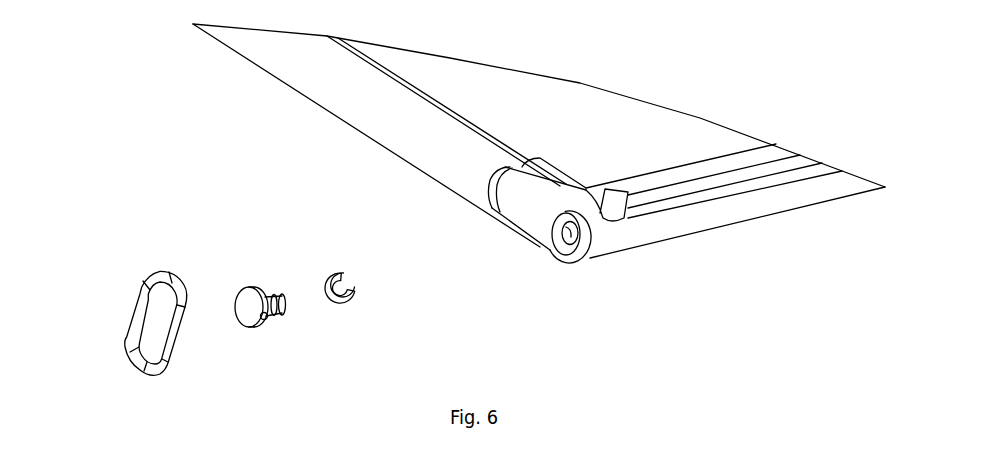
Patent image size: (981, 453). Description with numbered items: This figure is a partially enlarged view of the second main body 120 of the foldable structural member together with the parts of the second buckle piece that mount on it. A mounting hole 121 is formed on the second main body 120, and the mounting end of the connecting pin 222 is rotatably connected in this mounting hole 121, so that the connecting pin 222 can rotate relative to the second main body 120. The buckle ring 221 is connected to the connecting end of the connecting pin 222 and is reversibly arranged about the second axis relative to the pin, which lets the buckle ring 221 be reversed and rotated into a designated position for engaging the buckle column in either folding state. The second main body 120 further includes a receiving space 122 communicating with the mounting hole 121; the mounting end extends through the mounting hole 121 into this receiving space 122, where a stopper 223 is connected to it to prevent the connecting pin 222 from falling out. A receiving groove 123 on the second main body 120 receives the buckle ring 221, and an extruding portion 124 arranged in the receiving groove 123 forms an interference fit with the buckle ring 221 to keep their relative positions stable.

The second main body 120 is at (327, 80).
The mounting hole 121 is at (570, 233).
The receiving space 122 is at (615, 212).
The receiving groove 123 is at (515, 212).
The extruding portion 124 is at (495, 186).
The buckle ring 221 is at (135, 313).
The connecting pin 222 is at (258, 290).
The stopper 223 is at (332, 272).